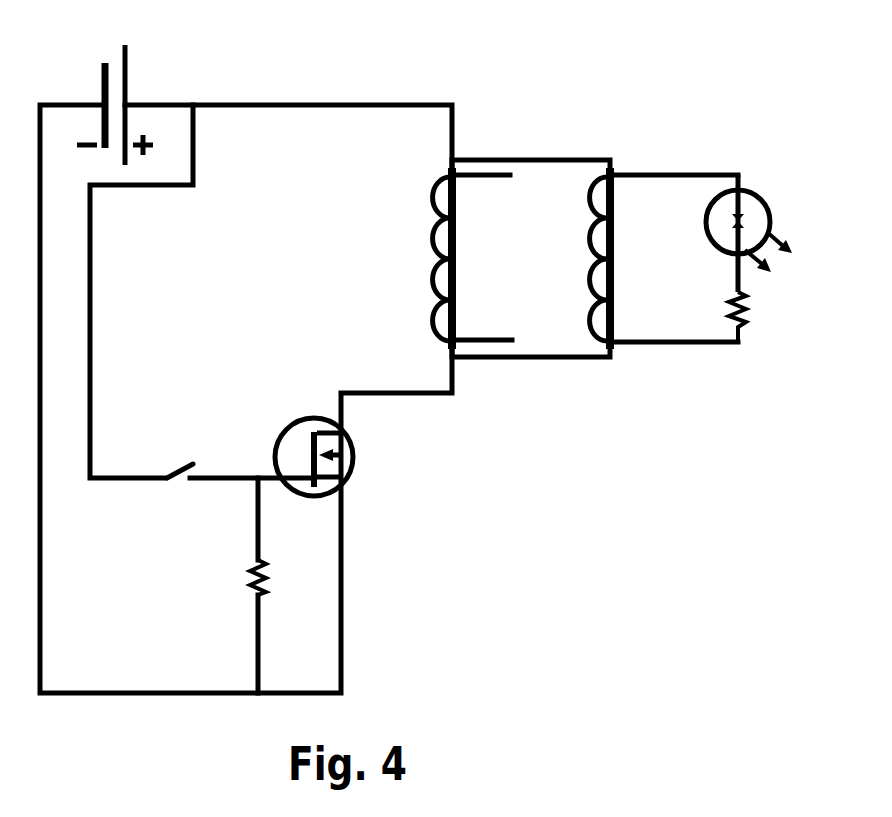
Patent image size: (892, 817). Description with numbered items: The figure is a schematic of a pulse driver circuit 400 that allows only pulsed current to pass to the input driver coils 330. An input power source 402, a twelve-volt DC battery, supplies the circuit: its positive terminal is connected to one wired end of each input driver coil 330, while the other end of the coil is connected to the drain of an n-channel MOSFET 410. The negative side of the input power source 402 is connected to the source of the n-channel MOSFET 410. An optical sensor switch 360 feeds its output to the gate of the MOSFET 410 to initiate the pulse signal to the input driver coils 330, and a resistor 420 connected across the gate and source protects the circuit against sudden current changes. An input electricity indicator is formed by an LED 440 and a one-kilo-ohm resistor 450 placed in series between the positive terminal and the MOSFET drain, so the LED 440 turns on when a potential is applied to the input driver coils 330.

The pulse driver circuit 400 is at (532, 82).
The input power source 402 is at (128, 73).
The input driver coils 330 is at (418, 237).
The LED 440 is at (762, 190).
The resistor 450 is at (753, 300).
The optical sensor switch 360 is at (172, 460).
The n-channel MOSFET 410 is at (350, 443).
The resistor 420 is at (250, 575).